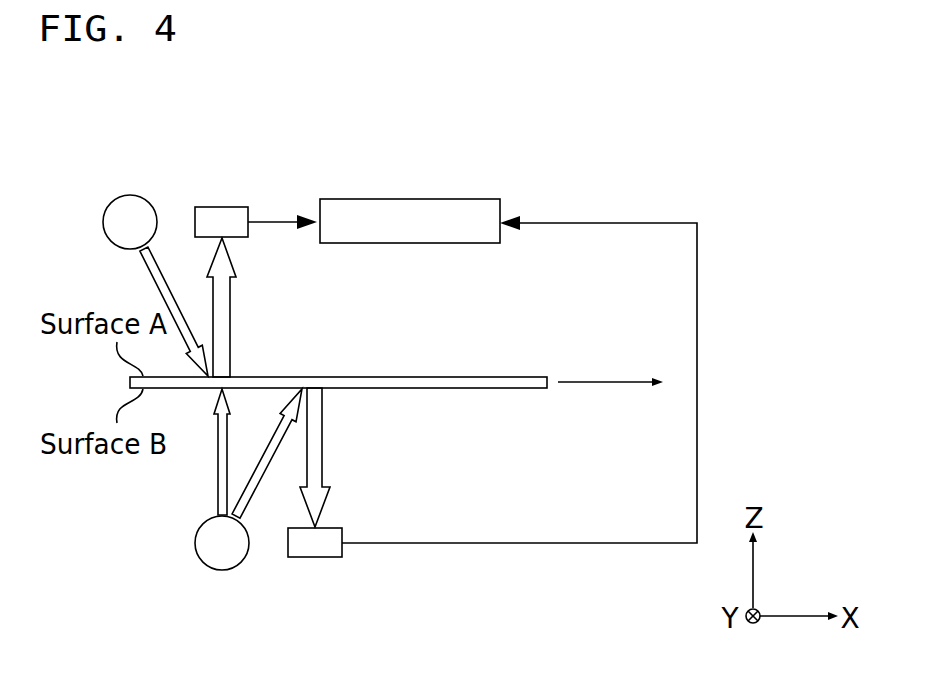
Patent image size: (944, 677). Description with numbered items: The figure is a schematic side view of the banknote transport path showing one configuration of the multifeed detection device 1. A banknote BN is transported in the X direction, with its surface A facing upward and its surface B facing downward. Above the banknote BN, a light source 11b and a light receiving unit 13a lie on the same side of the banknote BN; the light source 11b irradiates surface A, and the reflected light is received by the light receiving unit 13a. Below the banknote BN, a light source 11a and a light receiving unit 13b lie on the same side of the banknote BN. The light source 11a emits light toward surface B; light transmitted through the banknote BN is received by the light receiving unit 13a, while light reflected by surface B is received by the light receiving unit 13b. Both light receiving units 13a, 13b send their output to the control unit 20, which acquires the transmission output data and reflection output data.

The multifeed detection device 1 is at (560, 147).
The control unit 20 is at (450, 198).
The light source 11b is at (127, 203).
The light source 11a is at (220, 560).
The light receiving unit 13a is at (222, 217).
The light receiving unit 13b is at (315, 548).
The banknote BN is at (518, 380).